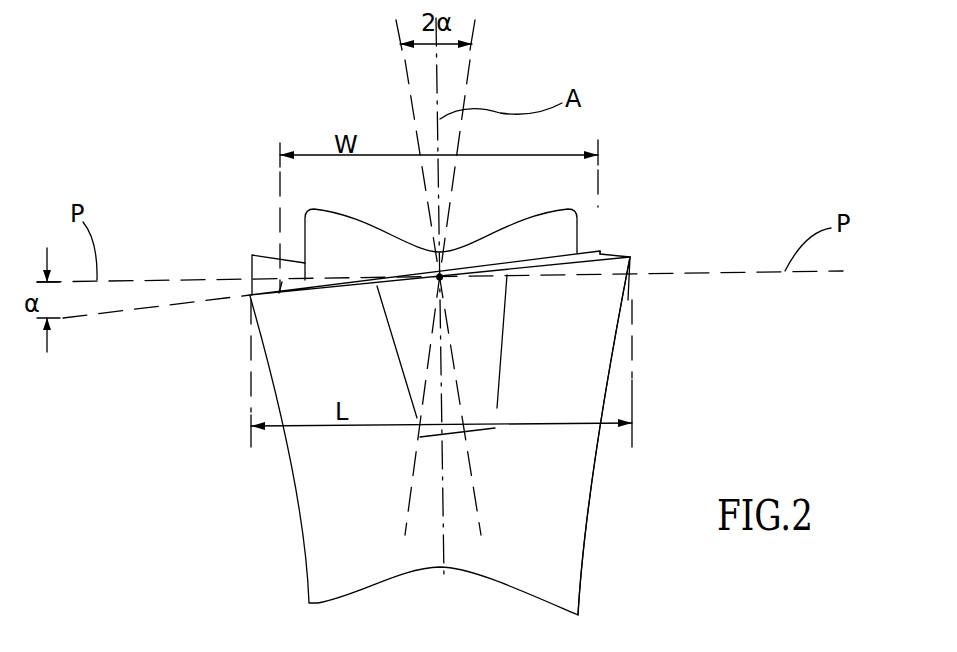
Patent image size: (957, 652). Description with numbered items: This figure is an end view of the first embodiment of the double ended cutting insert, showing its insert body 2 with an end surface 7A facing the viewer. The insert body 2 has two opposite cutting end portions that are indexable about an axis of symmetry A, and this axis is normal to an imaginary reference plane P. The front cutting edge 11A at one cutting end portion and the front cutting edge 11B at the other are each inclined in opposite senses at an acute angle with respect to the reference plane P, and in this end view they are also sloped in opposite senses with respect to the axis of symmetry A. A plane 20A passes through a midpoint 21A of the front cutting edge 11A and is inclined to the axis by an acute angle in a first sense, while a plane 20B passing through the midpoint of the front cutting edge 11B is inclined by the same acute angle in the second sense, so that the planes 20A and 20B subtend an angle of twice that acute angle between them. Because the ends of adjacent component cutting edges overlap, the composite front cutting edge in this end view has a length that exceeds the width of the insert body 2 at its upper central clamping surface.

The insert body 2 is at (658, 66).
The end surface 7A is at (343, 478).
The front cutting edge 11A is at (540, 266).
The front cutting edge 11B is at (631, 300).
The plane 20A is at (405, 79).
The plane 20B is at (468, 87).
The midpoint 21A is at (440, 277).